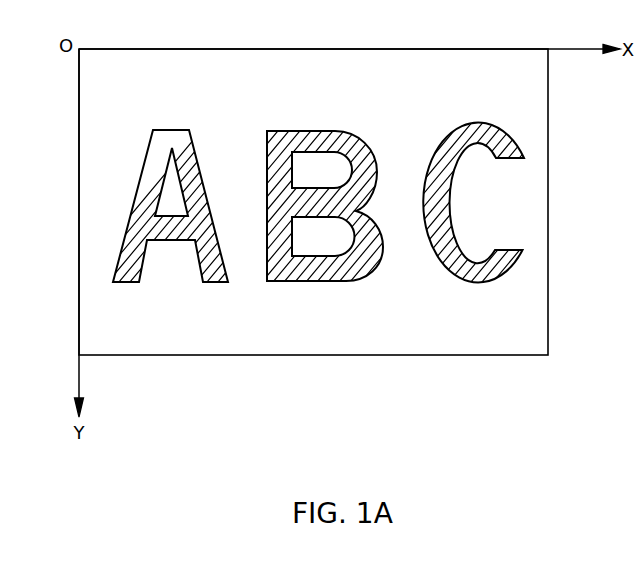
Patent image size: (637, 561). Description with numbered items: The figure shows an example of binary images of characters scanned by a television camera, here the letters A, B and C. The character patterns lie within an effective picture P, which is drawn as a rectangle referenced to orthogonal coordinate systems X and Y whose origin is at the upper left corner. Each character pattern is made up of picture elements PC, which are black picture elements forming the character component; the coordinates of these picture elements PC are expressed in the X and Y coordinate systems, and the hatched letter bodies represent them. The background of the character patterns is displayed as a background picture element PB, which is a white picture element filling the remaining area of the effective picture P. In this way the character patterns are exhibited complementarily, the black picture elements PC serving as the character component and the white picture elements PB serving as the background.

The effective picture P is at (177, 355).
The background picture element PB is at (323, 342).
The picture element PC is at (582, 135).